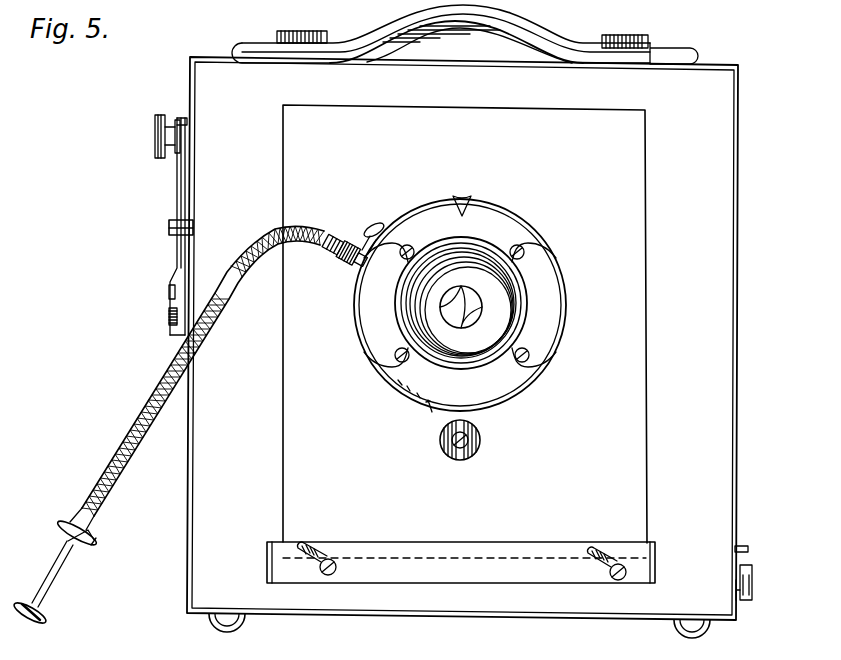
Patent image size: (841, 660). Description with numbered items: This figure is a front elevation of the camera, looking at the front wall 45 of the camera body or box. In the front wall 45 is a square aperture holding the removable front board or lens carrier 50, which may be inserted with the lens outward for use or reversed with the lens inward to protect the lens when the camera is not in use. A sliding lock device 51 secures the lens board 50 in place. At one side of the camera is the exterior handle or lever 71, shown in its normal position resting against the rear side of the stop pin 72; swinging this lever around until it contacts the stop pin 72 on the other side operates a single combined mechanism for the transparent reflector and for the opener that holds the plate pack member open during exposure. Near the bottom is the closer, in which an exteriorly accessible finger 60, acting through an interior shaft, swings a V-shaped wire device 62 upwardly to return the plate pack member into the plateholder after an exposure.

The front wall 45 is at (462, 321).
The front board or lens carrier 50 is at (465, 331).
The sliding lock device 51 is at (524, 549).
The exteriorly accessible finger 60 is at (752, 590).
The V-shaped wire device 62 is at (522, 310).
The exterior handle or lever 71 is at (177, 178).
The stop pin 72 is at (169, 228).